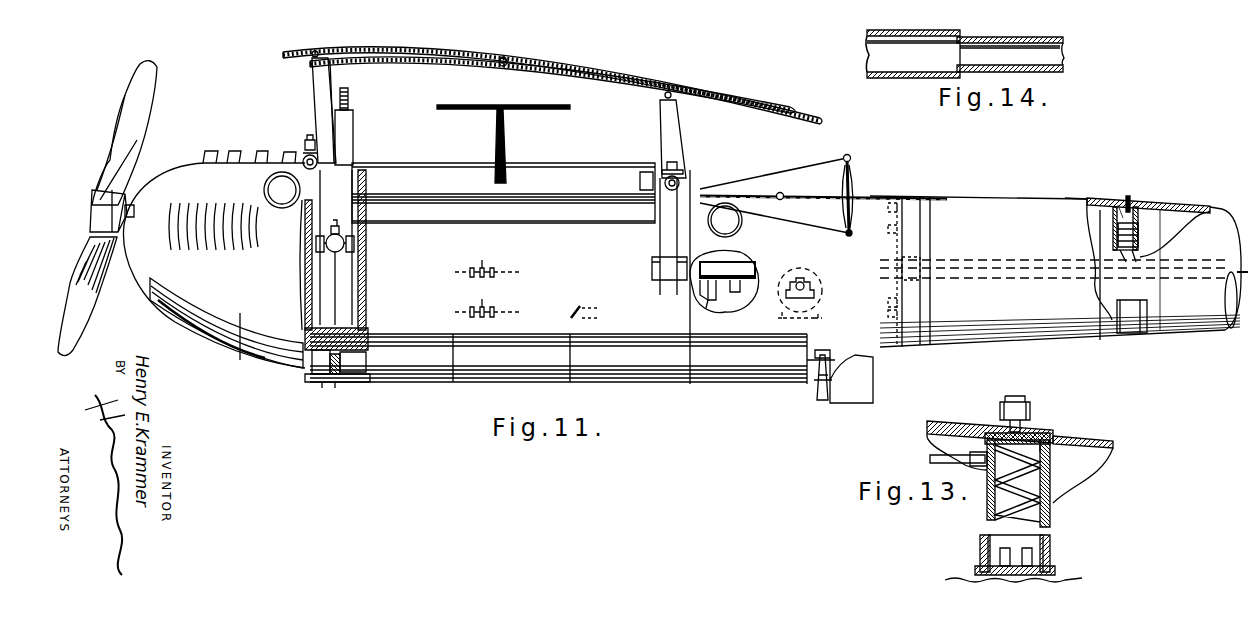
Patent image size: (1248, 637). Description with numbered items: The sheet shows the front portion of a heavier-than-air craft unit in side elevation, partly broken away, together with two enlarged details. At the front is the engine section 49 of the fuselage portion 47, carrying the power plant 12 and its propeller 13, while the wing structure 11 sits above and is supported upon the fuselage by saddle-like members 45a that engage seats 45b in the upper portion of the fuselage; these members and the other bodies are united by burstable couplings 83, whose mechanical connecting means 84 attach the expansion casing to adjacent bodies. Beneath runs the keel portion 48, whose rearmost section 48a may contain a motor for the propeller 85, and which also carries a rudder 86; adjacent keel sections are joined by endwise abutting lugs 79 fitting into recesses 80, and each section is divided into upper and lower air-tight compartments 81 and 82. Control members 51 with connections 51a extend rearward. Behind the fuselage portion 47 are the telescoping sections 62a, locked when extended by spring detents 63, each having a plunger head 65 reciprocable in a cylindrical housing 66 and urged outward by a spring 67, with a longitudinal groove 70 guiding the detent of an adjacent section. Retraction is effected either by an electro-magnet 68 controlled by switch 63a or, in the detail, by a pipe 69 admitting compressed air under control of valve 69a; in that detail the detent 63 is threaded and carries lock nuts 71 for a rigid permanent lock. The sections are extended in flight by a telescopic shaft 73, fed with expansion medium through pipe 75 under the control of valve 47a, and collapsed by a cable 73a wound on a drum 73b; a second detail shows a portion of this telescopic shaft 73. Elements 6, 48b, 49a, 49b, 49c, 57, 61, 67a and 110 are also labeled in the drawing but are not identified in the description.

In FIG. 11, the guide block 6 is at (354, 137).
In FIG. 11, the wing structure 11 is at (692, 132).
In FIG. 11, the power plant 12 is at (237, 150).
In FIG. 11, the propeller 13 is at (140, 118).
In FIG. 11, the saddle-like members 45a is at (276, 172).
In FIG. 11, the seats 45b is at (308, 200).
In FIG. 11, the fuselage portion 47 is at (576, 258).
In FIG. 11, the valve 47a is at (494, 310).
In FIG. 11, the keel portion 48 is at (558, 367).
In FIG. 11, the rearmost keel section 48a is at (760, 380).
In FIG. 11, the upper longeron 48b is at (360, 162).
In FIG. 11, the engine section 49 is at (378, 237).
In FIG. 11, the cowling wall 49a is at (300, 280).
In FIG. 11, the partition wall 49b is at (370, 288).
In FIG. 11, the cowling flange 49c is at (298, 240).
In FIG. 11, the control members 51 is at (870, 196).
In FIG. 11, the connections 51a is at (852, 158).
In FIG. 11, the fuel tank 57 is at (550, 165).
In FIG. 11, the baffle plate 61 is at (530, 112).
In FIG. 11, the telescoping sections 62a is at (1046, 271).
In FIG. 11, the spring detents 63 is at (316, 52).
In FIG. 13, the spring detents 63 is at (1040, 425).
In FIG. 11, the switch 63a is at (578, 321).
In FIG. 11, the plunger head 65 is at (1150, 210).
In FIG. 13, the plunger head 65 is at (1048, 455).
In FIG. 11, the cylindrical housing 66 is at (1140, 233).
In FIG. 13, the cylindrical housing 66 is at (1051, 480).
In FIG. 11, the spring 67 is at (1112, 238).
In FIG. 13, the spring 67 is at (982, 553).
In FIG. 11, the bottom plate 67a is at (304, 318).
In FIG. 11, the electro-magnet 68 is at (1138, 245).
In FIG. 13, the electro-magnet 68 is at (1056, 568).
In FIG. 11, the pipe 69 is at (1075, 198).
In FIG. 13, the pipe 69 is at (938, 465).
In FIG. 11, the valve 69a is at (492, 270).
In FIG. 11, the longitudinal groove 70 is at (1093, 200).
In FIG. 13, the longitudinal groove 70 is at (927, 436).
In FIG. 13, the lock nuts 71 is at (1031, 412).
In FIG. 11, the telescopic shaft 73 is at (510, 62).
In FIG. 14, the telescopic shaft 73 is at (995, 36).
In FIG. 11, the cable 73a is at (998, 280).
In FIG. 11, the drum 73b is at (784, 295).
In FIG. 11, the pipe 75 is at (706, 305).
In FIG. 11, the abutting lugs 79 is at (336, 384).
In FIG. 11, the recesses 80 is at (322, 388).
In FIG. 11, the upper air-tight compartment 81 is at (305, 378).
In FIG. 11, the lower air-tight compartment 82 is at (316, 380).
In FIG. 11, the burstable coupling casing 83 is at (305, 150).
In FIG. 11, the mechanical connecting means 84 is at (316, 250).
In FIG. 11, the propeller 85 is at (820, 392).
In FIG. 11, the rudder 86 is at (873, 385).
In FIG. 11, the threaded rod 110 is at (350, 102).